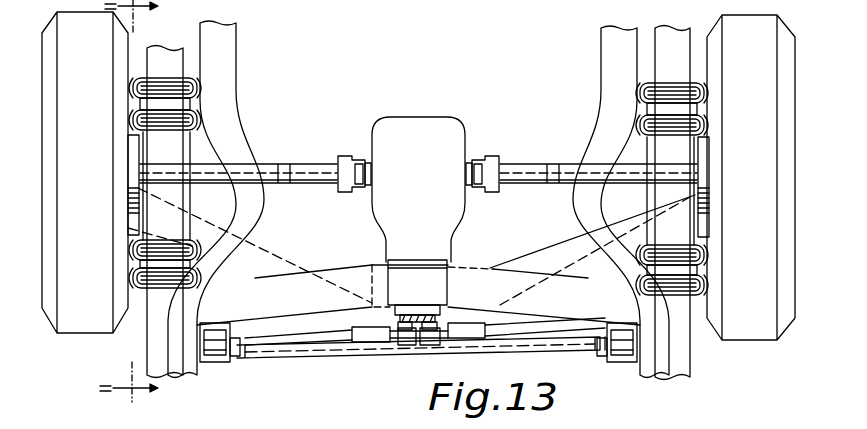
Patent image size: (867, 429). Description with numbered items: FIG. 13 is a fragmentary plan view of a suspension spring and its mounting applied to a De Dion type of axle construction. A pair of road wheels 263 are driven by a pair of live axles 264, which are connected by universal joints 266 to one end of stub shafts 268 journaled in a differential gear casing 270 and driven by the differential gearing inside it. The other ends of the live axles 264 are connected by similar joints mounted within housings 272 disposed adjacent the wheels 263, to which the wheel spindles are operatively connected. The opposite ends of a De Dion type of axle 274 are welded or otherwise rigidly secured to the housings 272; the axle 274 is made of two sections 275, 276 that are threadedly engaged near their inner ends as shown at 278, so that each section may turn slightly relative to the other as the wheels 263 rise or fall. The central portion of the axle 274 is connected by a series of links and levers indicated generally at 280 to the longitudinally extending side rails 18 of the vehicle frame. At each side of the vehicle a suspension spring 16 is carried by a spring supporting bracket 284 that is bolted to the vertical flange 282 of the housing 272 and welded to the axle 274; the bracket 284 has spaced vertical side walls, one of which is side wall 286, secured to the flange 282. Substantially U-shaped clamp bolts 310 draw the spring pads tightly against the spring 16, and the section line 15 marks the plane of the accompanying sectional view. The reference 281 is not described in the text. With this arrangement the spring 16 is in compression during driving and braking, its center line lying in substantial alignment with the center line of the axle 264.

The section line 15- 15 is at (145, 204).
The suspension spring 16 is at (167, 55).
The side rails 18 is at (218, 63).
The road wheels 263 is at (75, 322).
The live axles 264 is at (305, 170).
The universal joints 266 is at (357, 160).
The stub shafts 268 is at (368, 160).
The differential gear casing 270 is at (412, 132).
The housings 272 is at (133, 173).
The De Dion type of axle 274 is at (275, 257).
The axle section 275 is at (307, 270).
The axle section 276 is at (543, 263).
The threaded engagement 278 is at (473, 268).
The links and levers 280 is at (413, 366).
The flange 281 is at (190, 228).
The vertical flange 282 is at (128, 190).
The spring supporting bracket 284 is at (198, 136).
The vertical side wall 286 is at (145, 123).
The clamp bolts 310 is at (143, 122).